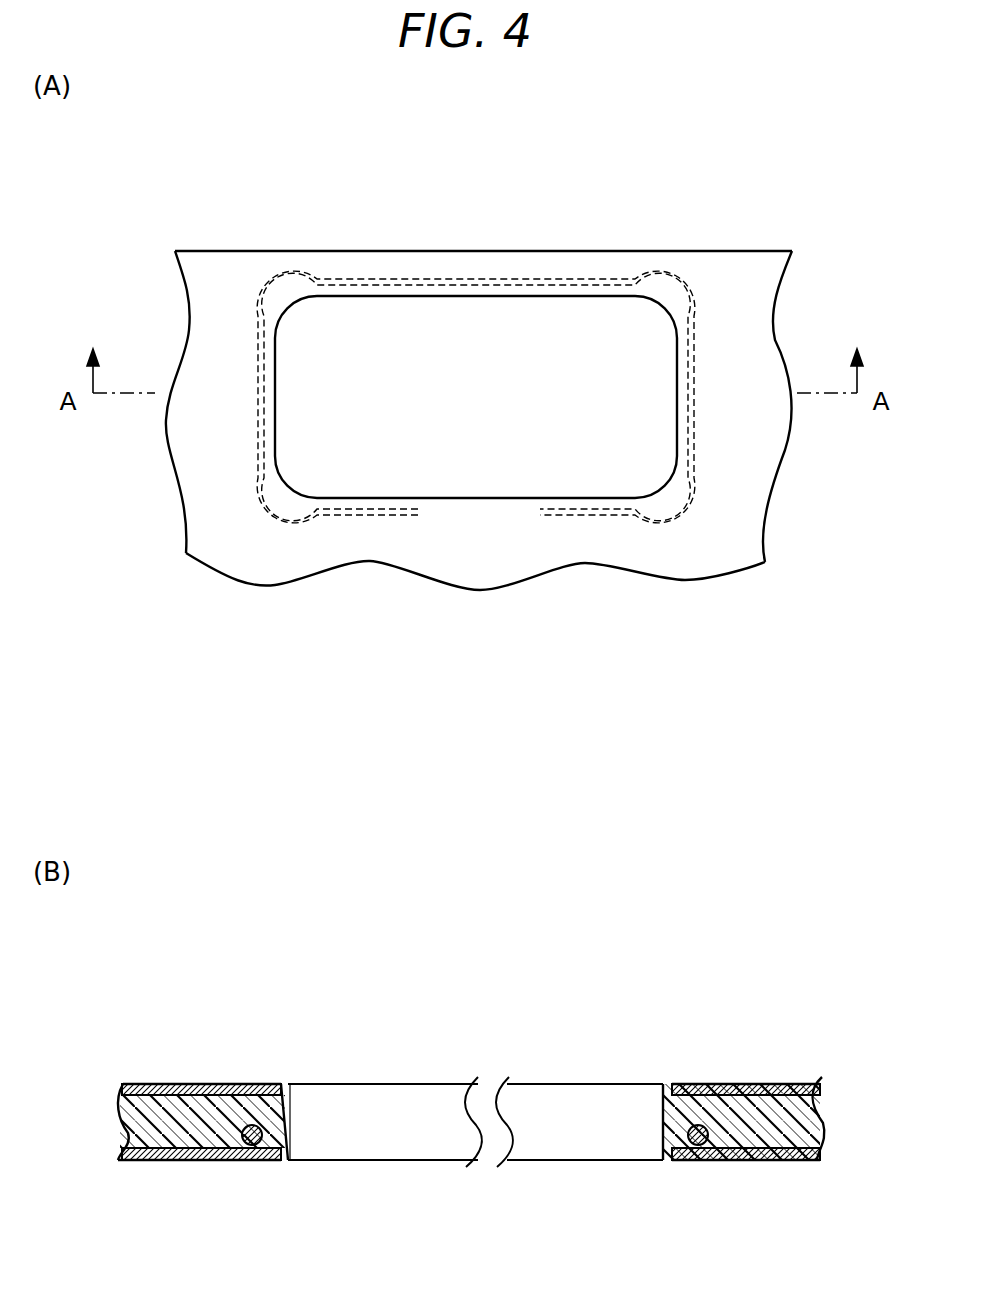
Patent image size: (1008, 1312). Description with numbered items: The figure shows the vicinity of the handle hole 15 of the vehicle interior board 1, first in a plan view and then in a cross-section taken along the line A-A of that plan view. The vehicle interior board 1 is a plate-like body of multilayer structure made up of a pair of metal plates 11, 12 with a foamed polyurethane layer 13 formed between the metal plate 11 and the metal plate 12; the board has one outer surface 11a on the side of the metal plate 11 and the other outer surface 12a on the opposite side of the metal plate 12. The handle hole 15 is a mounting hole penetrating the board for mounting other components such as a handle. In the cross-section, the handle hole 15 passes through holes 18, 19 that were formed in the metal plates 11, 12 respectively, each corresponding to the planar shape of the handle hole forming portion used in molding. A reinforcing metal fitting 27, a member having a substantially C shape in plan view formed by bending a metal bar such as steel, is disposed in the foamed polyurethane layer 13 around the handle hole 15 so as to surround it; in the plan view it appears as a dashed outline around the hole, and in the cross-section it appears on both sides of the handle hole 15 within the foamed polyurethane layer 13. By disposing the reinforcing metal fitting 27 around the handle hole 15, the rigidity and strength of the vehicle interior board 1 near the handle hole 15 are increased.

The vehicle interior board 1 is at (196, 180).
The metal plate 11 is at (725, 1160).
The outer surface 11a is at (222, 1160).
The metal plate 12 is at (770, 1082).
The outer surface 12a is at (252, 1087).
The foamed polyurethane layer 13 is at (170, 1110).
The handle hole 15 is at (513, 312).
The hole 18 is at (298, 1160).
The hole 19 is at (291, 1092).
The reinforcing metal fitting 27 is at (683, 300).